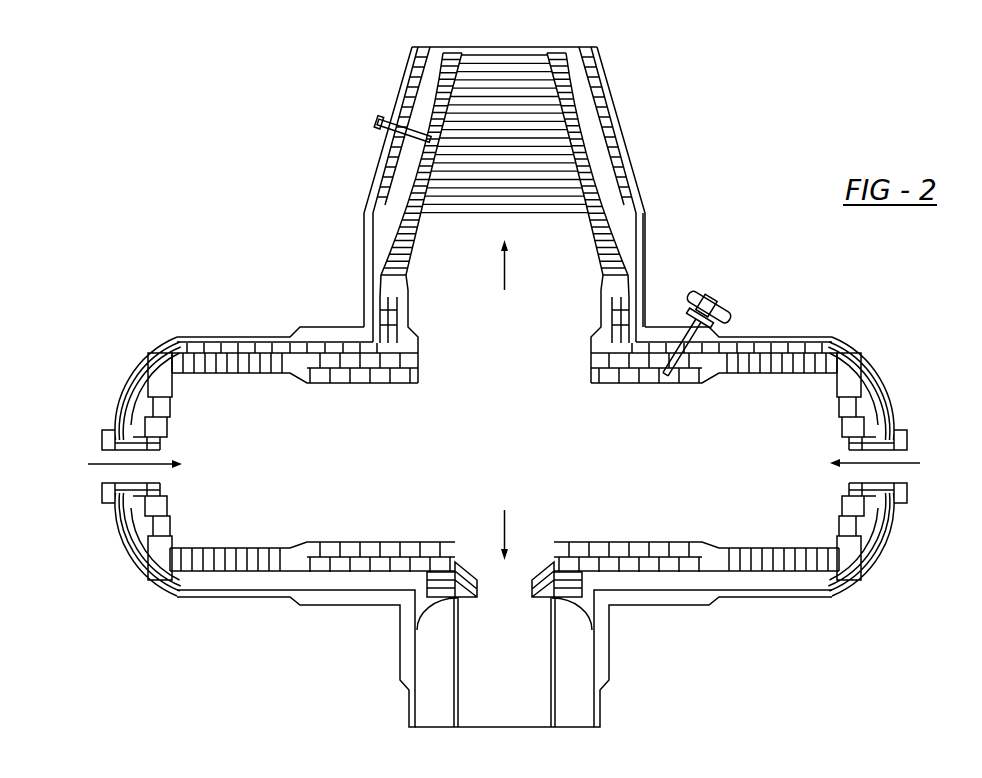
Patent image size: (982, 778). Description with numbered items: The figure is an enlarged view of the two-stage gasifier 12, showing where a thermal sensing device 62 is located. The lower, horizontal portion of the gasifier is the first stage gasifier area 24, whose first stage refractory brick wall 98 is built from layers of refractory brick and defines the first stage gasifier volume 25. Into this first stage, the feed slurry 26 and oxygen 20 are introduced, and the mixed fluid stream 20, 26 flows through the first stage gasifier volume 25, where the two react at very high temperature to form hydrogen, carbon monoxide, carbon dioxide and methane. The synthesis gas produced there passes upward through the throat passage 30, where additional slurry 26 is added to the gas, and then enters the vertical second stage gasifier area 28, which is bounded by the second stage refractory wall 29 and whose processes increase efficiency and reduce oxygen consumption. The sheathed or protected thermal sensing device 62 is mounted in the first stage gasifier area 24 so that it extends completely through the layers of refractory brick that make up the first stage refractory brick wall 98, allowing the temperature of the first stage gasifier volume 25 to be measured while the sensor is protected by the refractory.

The two-stage gasifier 12 is at (290, 174).
The oxygen 20 is at (97, 462).
The first stage gasifier area 24 is at (225, 290).
The first stage gasifier volume 25 is at (702, 471).
The slurry 26 is at (905, 462).
The second stage gasifier area 28 is at (626, 78).
The second stage refractory wall 29 is at (384, 90).
The throat passage 30 is at (500, 149).
The thermal sensing device 62 is at (707, 292).
The first stage refractory brick wall 98 is at (663, 286).